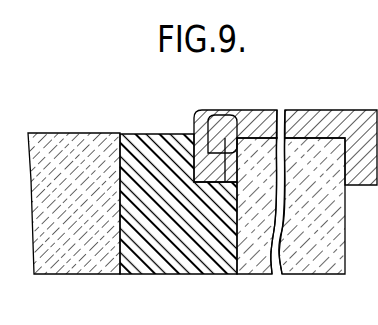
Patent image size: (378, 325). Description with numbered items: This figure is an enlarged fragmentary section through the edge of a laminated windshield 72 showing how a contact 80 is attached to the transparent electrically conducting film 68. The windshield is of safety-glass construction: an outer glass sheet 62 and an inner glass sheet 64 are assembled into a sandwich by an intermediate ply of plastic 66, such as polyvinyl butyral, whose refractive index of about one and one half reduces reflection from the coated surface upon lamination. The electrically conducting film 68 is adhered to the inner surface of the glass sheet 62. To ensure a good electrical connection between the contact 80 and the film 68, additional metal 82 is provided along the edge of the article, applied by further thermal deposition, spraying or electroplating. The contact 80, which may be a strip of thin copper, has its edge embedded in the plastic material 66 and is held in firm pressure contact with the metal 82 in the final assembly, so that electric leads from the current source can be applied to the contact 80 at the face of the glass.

The glass sheet 62 is at (273, 274).
The glass sheet 64 is at (90, 262).
The plastic layer 66 is at (163, 265).
The electrically conducting film 68 is at (237, 274).
The windshield 72 is at (328, 192).
The contact 80 is at (193, 116).
The additional metal 82 is at (208, 115).